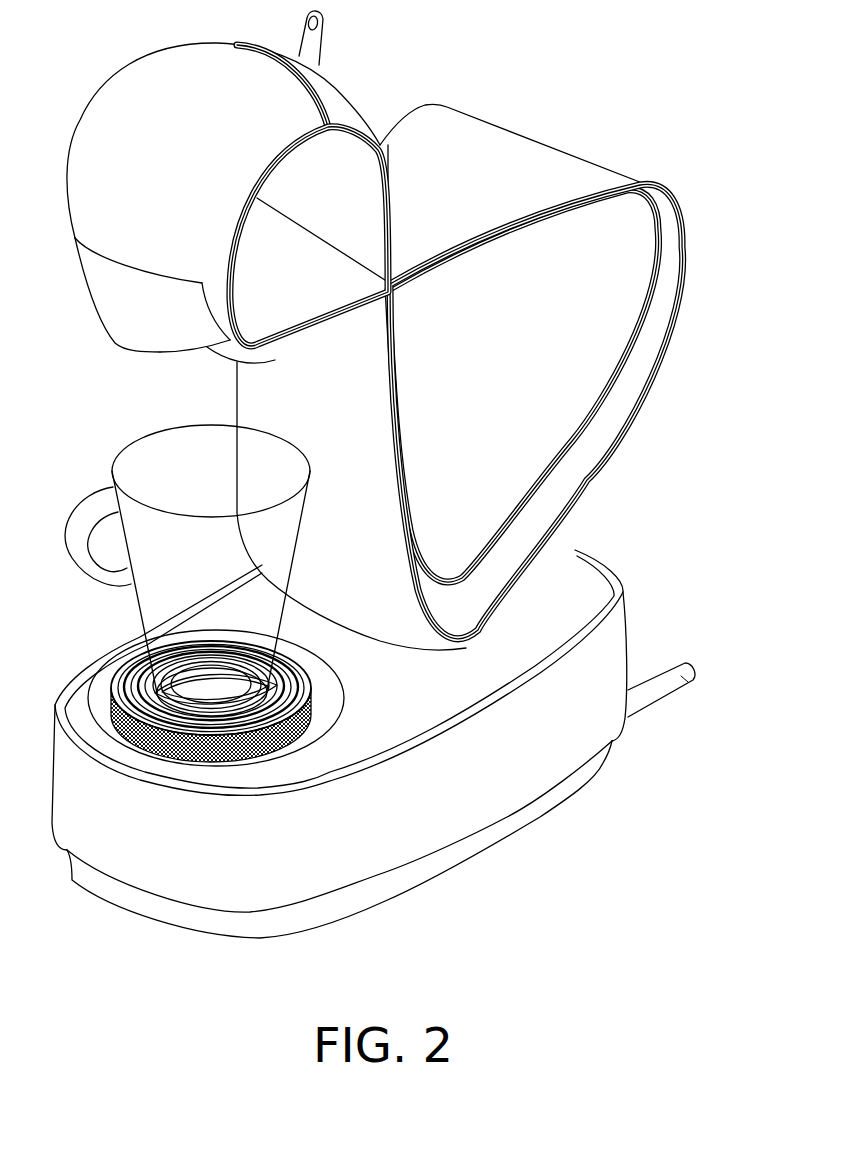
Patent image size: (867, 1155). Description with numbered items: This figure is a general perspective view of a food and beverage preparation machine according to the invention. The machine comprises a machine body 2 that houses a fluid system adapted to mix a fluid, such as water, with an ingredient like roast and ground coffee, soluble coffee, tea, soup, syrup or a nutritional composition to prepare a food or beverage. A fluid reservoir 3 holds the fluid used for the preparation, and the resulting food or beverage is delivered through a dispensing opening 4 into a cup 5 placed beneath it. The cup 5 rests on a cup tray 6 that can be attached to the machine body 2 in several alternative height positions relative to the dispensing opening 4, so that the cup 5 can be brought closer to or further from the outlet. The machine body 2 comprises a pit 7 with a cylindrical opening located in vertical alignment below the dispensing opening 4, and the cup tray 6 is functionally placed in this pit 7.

The machine body 2 is at (532, 742).
The fluid reservoir 3 is at (487, 365).
The dispensing opening 4 is at (142, 358).
The cup 5 is at (112, 486).
The cup tray 6 is at (108, 732).
The pit 7 is at (676, 437).